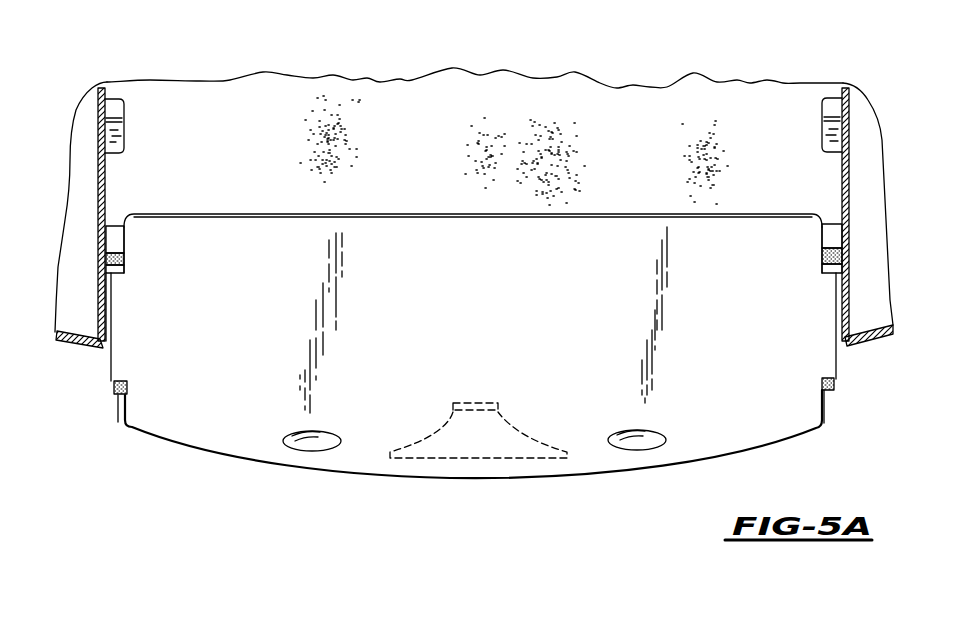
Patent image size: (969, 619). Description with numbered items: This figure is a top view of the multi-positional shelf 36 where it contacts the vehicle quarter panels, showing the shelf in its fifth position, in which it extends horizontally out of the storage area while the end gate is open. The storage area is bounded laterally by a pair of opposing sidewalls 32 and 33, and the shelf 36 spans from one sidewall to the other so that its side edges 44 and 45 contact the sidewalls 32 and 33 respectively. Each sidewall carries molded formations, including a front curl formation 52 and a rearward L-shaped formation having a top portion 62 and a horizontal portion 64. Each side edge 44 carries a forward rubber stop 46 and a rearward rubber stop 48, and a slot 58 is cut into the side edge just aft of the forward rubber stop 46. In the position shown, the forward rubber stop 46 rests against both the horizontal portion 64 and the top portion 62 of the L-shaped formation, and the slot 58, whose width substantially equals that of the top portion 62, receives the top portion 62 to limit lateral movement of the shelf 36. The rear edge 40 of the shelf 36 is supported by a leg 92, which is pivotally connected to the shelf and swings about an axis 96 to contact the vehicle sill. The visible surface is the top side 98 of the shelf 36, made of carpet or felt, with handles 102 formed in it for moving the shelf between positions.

The sidewall 32 is at (848, 110).
The sidewall 33 is at (102, 124).
The front curl formation 52 is at (147, 118).
The horizontal portion 64 is at (118, 240).
The forward rubber stop 46 is at (118, 260).
The top portion 62 is at (120, 269).
The slot 58 is at (113, 276).
The side edge 45 is at (111, 330).
The side edge 44 is at (836, 336).
The rearward rubber stop 48 is at (120, 395).
The multi-positional shelf 36 is at (402, 320).
The top side 98 is at (595, 320).
The handles 102 is at (300, 448).
The leg 92 is at (467, 423).
The axis 96 is at (530, 458).
The rear edge 40 is at (592, 468).